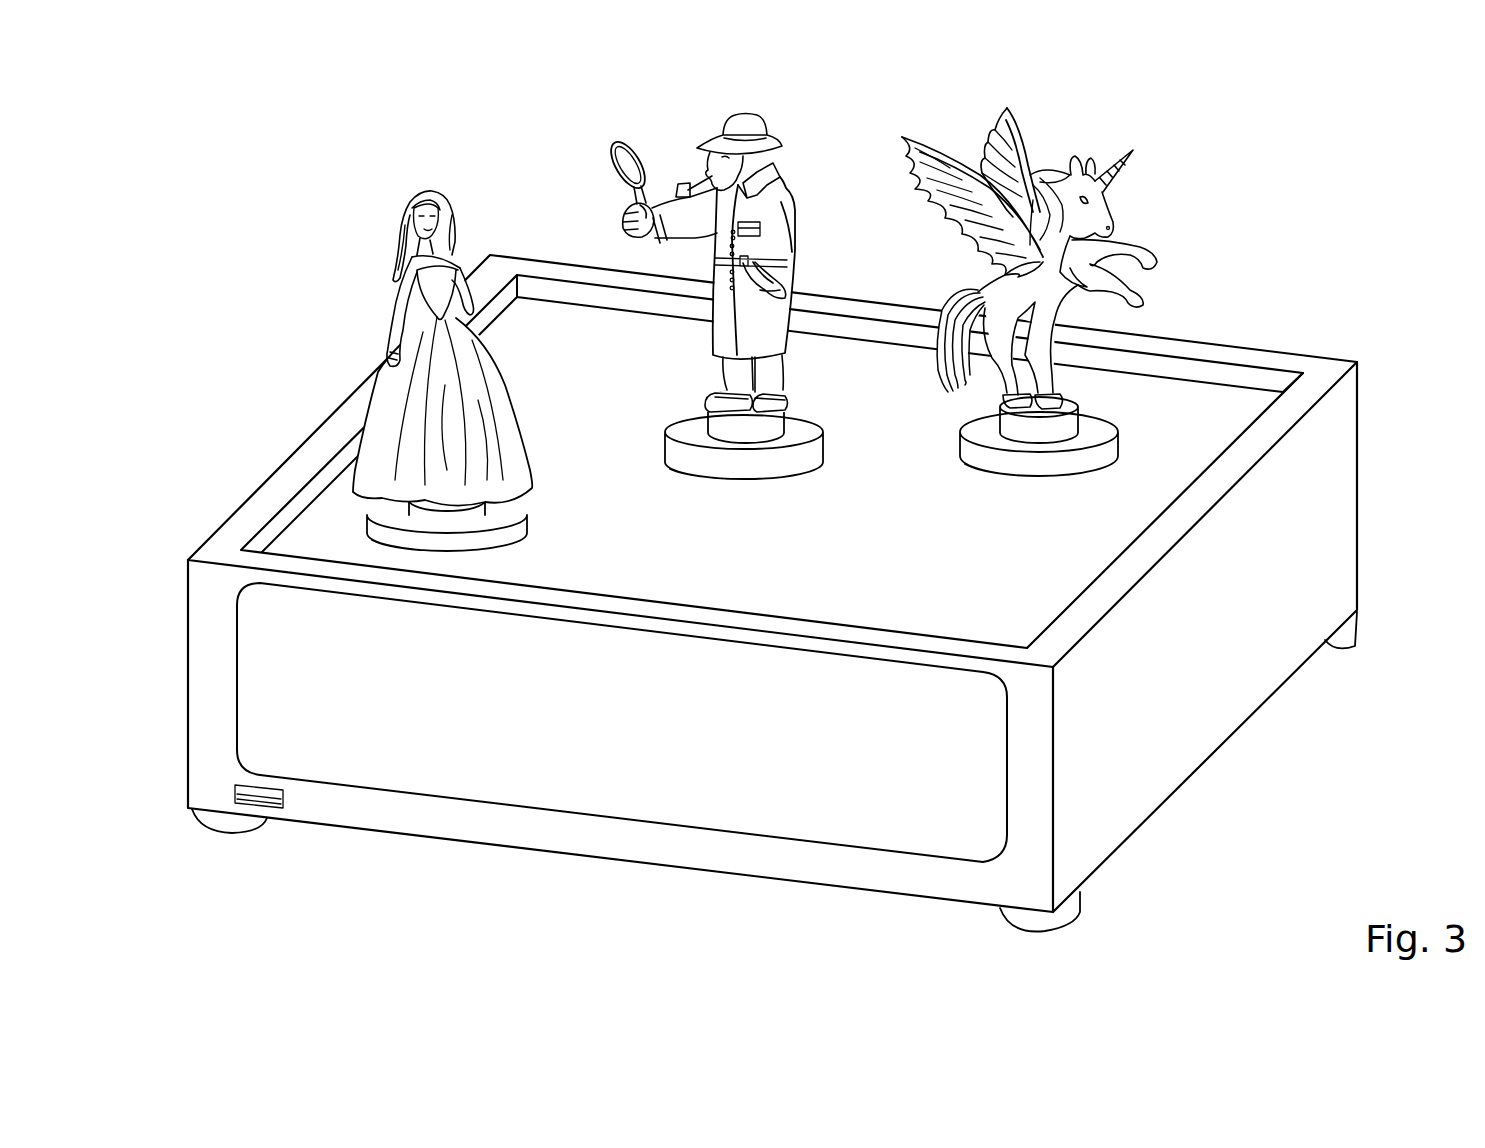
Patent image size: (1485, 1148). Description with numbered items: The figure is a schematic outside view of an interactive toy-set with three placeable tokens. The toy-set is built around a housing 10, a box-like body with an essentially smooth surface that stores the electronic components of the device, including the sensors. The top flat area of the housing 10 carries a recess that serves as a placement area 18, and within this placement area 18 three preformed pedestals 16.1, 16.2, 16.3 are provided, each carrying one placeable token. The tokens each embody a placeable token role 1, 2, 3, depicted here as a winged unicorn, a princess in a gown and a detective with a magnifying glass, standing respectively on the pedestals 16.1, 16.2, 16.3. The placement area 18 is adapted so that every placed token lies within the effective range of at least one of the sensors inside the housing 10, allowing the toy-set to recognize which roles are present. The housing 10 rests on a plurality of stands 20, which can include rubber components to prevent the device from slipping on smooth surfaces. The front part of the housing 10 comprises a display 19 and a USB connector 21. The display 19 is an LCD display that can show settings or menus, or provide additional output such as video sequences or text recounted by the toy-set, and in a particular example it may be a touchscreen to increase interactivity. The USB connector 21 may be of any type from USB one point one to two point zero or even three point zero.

The placeable token role 1 is at (961, 188).
The placeable token role 2 is at (410, 386).
The placeable token role 3 is at (783, 237).
The housing 10 is at (1322, 378).
The preformed pedestal 16.1 is at (1093, 432).
The preformed pedestal 16.2 is at (415, 540).
The preformed pedestal 16.3 is at (801, 430).
The placement area 18 is at (583, 397).
The display 19 is at (292, 676).
The stands 20 is at (1352, 635).
The USB connector 21 is at (237, 797).